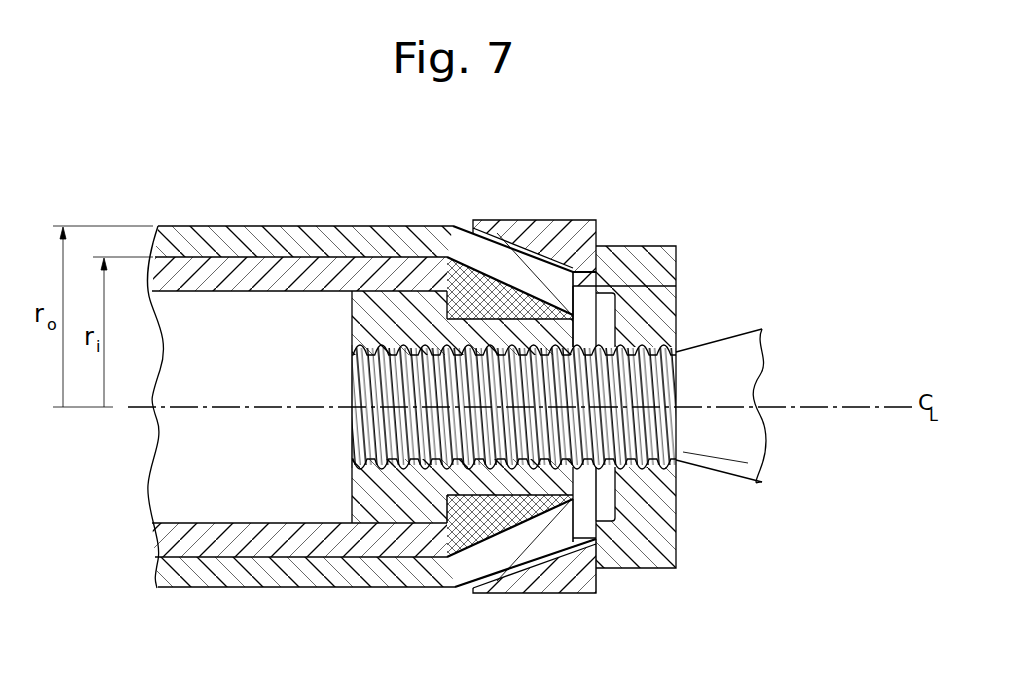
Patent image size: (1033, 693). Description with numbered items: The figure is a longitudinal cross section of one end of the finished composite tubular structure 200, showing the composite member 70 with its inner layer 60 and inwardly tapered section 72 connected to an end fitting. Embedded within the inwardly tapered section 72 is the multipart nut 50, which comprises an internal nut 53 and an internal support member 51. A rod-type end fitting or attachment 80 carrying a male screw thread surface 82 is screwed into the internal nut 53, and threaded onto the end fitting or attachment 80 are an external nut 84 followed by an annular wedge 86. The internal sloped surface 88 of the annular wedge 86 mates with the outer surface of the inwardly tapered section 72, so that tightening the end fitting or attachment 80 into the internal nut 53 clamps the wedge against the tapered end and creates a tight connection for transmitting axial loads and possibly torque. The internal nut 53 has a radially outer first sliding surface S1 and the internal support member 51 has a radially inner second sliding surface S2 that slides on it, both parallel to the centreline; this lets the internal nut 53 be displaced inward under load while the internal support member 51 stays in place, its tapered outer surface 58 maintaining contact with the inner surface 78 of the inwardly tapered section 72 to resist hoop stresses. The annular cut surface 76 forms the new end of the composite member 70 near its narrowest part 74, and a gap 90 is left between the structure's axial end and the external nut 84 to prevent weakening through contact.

The composite tubular structure 200 is at (106, 177).
The composite member 70 is at (200, 232).
The inner tube layer 60 is at (265, 277).
The internal nut 53 is at (400, 306).
The male screw thread surface 82 is at (428, 428).
The internal support member 51 is at (467, 280).
The inner surface of the inwardly tapered section 78 is at (500, 278).
The inwardly tapered section 72 is at (490, 558).
The annular wedge 86 is at (547, 232).
The internal sloped surface 88 is at (525, 572).
The external nut 84 is at (660, 268).
The cut surface 76 is at (676, 286).
The gap 90 is at (607, 500).
The narrowest part 74 is at (595, 570).
The tapered outer surface 58 is at (518, 512).
The end fitting or attachment 80 is at (735, 372).
The multipart nut 50 is at (336, 496).
The first sliding surface S1 is at (450, 493).
The second sliding surface S2 is at (472, 495).